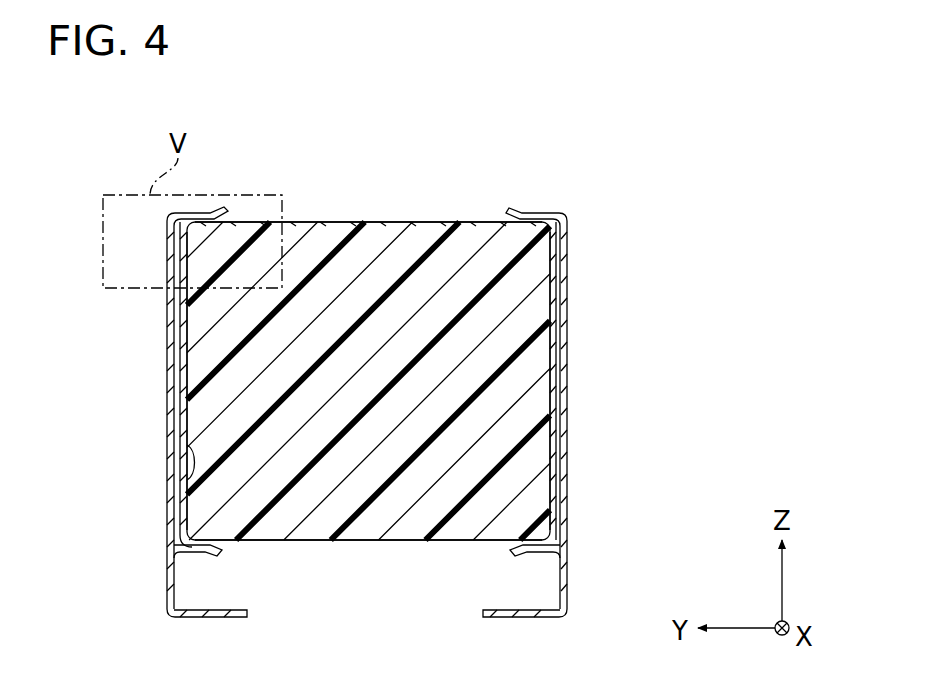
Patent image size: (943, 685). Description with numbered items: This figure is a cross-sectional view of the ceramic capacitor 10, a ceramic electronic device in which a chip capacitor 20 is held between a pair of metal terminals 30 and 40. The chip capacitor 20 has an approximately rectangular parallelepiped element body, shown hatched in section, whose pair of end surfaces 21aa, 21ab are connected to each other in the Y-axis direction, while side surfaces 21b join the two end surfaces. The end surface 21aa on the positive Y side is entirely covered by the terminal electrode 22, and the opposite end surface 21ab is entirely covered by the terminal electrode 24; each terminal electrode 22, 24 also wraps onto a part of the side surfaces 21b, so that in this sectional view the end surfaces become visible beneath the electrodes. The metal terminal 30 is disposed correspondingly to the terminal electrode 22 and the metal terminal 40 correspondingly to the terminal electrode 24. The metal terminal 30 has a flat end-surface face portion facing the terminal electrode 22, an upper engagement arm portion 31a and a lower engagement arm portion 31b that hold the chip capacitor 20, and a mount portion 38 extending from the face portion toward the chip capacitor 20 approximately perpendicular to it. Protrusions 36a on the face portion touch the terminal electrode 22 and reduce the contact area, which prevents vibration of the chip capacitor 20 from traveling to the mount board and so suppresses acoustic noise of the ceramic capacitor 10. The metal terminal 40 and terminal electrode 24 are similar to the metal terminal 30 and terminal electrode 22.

The ceramic capacitor 10 is at (548, 149).
The chip capacitor 20 is at (433, 212).
The end surface 21aa is at (187, 352).
The end surface 21ab is at (550, 337).
The side surface 21b is at (343, 221).
The terminal electrode 22 is at (175, 400).
The terminal electrode 24 is at (553, 388).
The metal terminal 30 is at (160, 223).
The upper engagement arm portion 31a is at (192, 216).
The lower engagement arm portion 31b is at (200, 549).
The protrusion 36a is at (188, 450).
The mount portion 38 is at (215, 612).
The metal terminal 40 is at (573, 211).